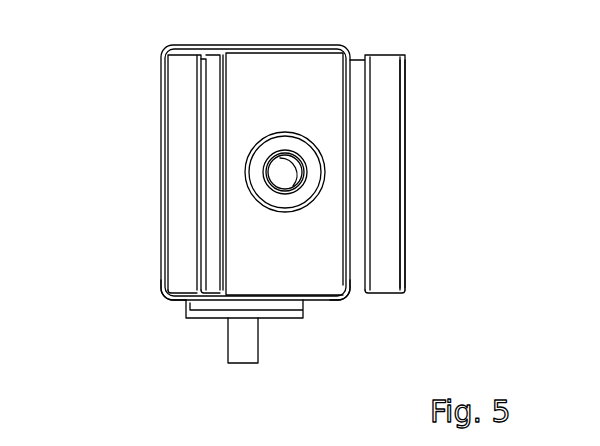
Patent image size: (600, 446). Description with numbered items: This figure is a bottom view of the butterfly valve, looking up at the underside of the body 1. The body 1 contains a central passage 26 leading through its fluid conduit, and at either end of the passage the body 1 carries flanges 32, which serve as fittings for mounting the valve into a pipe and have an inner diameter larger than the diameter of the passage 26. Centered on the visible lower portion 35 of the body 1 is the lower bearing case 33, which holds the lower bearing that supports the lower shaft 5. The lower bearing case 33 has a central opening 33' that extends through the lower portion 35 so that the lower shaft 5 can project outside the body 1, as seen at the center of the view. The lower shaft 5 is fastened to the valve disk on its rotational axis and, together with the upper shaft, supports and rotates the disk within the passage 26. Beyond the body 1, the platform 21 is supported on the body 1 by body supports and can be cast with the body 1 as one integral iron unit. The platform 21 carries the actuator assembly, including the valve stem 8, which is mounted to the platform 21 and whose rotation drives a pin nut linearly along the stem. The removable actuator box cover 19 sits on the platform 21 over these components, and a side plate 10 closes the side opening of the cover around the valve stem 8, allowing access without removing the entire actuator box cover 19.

The body 1 is at (302, 62).
The flanges 32 is at (178, 85).
The lower portion 35 is at (312, 136).
The lower shaft 5 is at (283, 168).
The lower bearing case 33 is at (200, 186).
The central opening 33' is at (375, 196).
The central passage 26 is at (408, 183).
The actuator box cover 19 is at (165, 300).
The platform 21 is at (357, 297).
The side plate 10 is at (290, 317).
The valve stem 8 is at (250, 345).